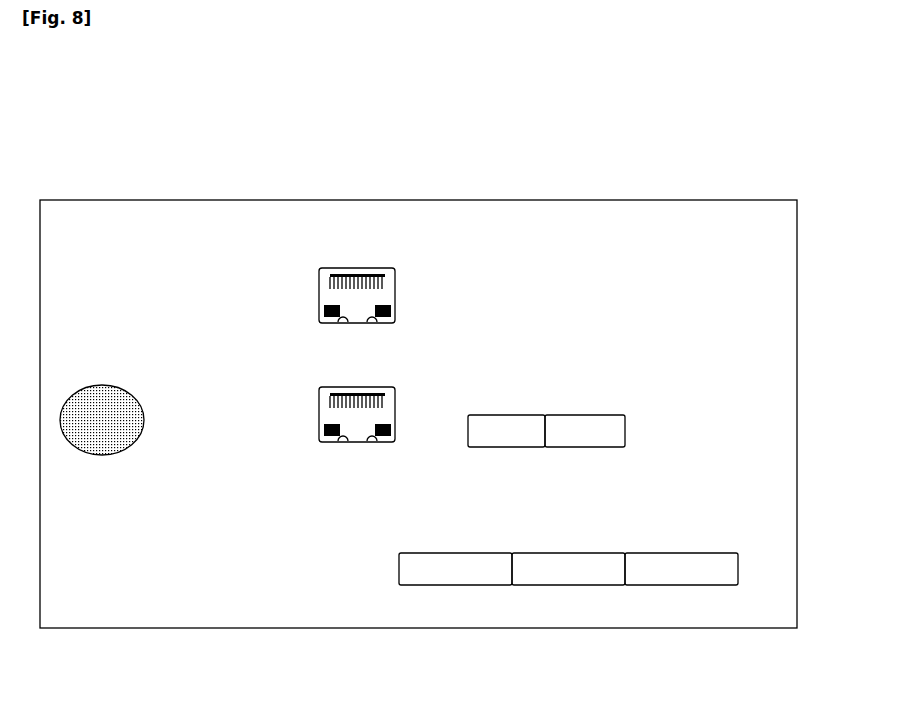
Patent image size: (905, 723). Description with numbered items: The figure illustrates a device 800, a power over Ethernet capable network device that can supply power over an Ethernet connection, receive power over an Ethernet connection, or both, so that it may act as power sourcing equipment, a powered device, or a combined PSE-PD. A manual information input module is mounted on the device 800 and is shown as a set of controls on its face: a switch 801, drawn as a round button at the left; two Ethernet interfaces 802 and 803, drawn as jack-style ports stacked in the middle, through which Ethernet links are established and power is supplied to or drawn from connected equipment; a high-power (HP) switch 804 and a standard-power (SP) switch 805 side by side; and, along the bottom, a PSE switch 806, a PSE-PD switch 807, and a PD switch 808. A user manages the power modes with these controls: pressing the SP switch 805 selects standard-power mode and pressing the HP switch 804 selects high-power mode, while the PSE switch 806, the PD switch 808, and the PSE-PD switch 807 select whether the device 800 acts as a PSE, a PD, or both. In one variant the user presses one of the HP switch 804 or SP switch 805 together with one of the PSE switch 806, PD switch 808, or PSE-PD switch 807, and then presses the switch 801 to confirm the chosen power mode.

The device 800 is at (80, 199).
The switch 801 is at (103, 385).
The Ethernet interface 802 is at (356, 268).
The Ethernet interface 803 is at (356, 387).
The high-power (HP) switch 804 is at (521, 415).
The standard-power (SP) switch 805 is at (601, 415).
The PSE switch 806 is at (469, 553).
The PSE-PD switch 807 is at (598, 553).
The PD switch 808 is at (711, 553).